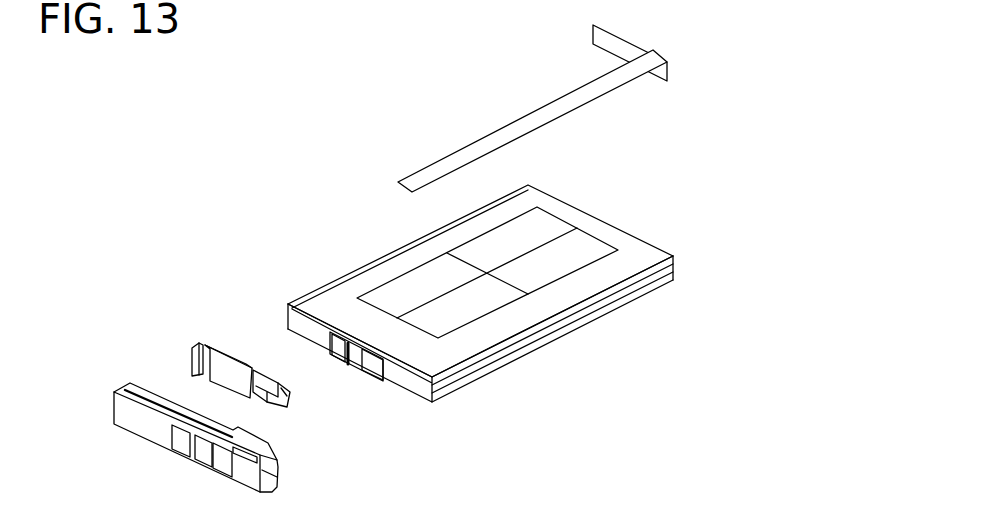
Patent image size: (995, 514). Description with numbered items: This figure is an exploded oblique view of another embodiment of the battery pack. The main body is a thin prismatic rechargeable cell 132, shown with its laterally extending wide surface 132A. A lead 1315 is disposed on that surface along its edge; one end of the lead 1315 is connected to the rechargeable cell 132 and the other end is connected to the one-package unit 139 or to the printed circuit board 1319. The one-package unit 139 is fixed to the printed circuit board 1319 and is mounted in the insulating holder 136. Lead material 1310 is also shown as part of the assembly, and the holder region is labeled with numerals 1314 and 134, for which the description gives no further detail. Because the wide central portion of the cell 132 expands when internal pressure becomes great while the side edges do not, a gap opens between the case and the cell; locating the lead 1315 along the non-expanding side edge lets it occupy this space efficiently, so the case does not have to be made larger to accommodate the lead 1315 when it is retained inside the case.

The rechargeable cell 132 is at (480, 286).
The laterally extending wide surface 132A is at (423, 291).
The lead 1315 is at (508, 133).
The one-package unit 139 is at (258, 321).
The printed circuit board 1319 is at (222, 355).
The lead material 1310 is at (190, 360).
The terminal holder 1314 is at (160, 403).
The insulating holder 136 is at (135, 413).
The terminal openings 134 is at (148, 467).